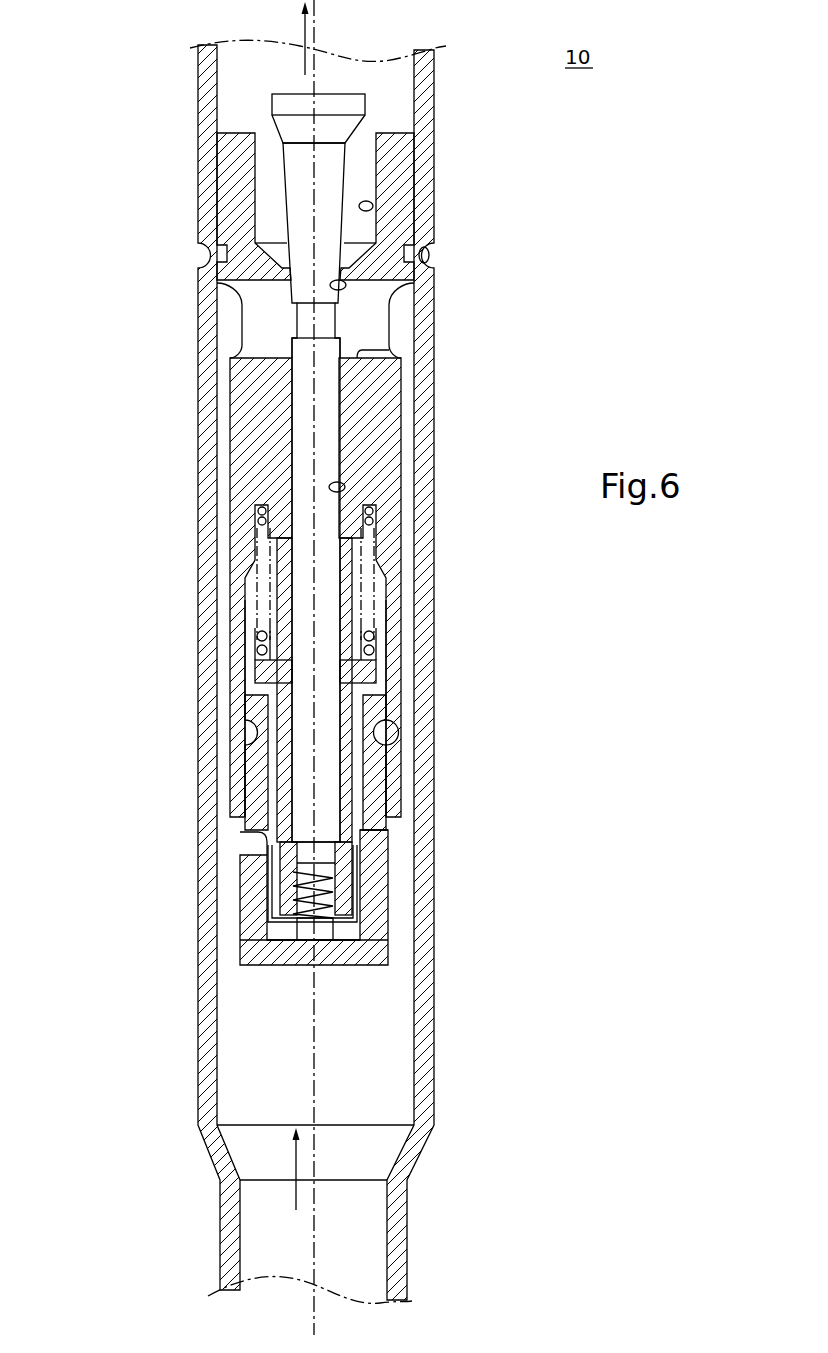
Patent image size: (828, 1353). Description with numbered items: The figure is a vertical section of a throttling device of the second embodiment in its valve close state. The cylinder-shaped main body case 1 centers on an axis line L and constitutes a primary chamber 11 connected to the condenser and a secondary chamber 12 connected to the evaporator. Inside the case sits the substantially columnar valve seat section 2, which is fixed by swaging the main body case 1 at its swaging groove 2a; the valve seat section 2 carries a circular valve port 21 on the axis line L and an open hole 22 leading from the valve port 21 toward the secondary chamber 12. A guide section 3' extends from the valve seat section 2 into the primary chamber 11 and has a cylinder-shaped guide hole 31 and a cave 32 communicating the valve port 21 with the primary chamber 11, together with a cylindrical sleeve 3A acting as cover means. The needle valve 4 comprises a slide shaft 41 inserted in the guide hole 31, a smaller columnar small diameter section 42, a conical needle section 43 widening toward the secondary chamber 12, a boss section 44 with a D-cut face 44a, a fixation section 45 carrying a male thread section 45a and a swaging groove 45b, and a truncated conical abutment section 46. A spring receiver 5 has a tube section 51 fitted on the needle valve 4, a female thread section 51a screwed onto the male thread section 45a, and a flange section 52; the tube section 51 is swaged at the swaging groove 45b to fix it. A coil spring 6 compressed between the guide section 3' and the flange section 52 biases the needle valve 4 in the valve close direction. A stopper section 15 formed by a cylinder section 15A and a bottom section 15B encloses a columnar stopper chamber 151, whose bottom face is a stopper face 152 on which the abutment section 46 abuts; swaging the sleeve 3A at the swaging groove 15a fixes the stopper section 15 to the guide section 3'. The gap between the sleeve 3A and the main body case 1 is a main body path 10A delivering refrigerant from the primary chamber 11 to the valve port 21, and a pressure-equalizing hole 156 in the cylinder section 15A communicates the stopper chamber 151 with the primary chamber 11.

The main body case 1 is at (440, 160).
The valve seat section 2 is at (425, 200).
The swaging groove 2a is at (430, 253).
The valve port 21 is at (345, 286).
The open hole 22 is at (372, 207).
The needle valve 4 is at (350, 320).
The cave 32 is at (360, 349).
The guide section 3' is at (381, 587).
The cylindrical sleeve 3A is at (400, 598).
The guide hole 31 is at (345, 487).
The coil spring 6 is at (373, 518).
The slide shaft 41 is at (298, 583).
The small diameter section 42 is at (300, 327).
The needle section 43 is at (298, 233).
The boss section 44 is at (293, 137).
The D-cut face 44a is at (300, 110).
The fixation section 45 is at (292, 875).
The male thread section 45a is at (352, 885).
The swaging groove 45b is at (345, 848).
The abutment section 46 is at (290, 938).
The spring receiver 5 is at (390, 667).
The tube section 51 is at (355, 780).
The female thread section 51a is at (360, 893).
The flange section 52 is at (375, 641).
The stopper chamber 151 is at (272, 760).
The stopper face 152 is at (333, 920).
The stopper section 15 is at (410, 948).
The cylinder section 15A is at (405, 830).
The bottom section 15B is at (330, 966).
The swaging groove 15a is at (393, 740).
The pressure-equalizing hole 156 is at (250, 838).
The main body path 10A is at (230, 664).
The primary chamber 11 is at (240, 1000).
The secondary chamber 12 is at (240, 97).
The axis line L is at (315, 1070).